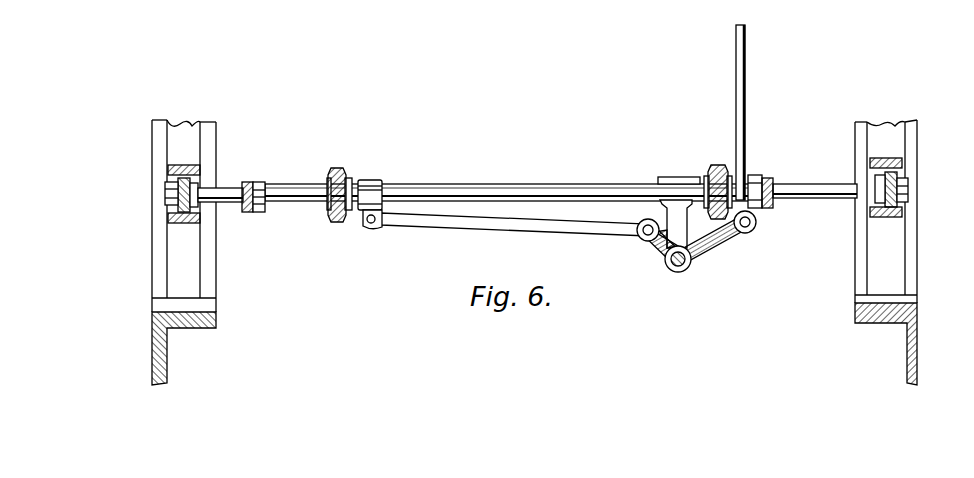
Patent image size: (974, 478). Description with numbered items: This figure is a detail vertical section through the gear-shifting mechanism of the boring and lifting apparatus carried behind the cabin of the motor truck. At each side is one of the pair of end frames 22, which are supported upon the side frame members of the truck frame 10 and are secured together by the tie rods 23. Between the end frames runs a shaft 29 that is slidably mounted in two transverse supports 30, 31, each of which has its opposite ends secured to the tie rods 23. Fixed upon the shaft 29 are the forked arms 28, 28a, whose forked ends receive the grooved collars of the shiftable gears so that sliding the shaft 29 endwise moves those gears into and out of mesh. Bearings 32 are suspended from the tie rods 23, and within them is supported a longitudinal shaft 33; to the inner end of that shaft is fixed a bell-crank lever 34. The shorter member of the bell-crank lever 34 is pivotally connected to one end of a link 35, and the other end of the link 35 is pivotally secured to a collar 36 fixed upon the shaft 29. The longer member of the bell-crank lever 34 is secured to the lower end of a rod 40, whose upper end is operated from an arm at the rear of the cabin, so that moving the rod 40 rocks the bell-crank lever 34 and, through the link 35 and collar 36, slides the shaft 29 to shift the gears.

The frame 10 is at (167, 367).
The end frame 22 is at (162, 203).
The rod 23 is at (235, 186).
The arm 28 is at (256, 212).
The arm 28a is at (770, 208).
The shaft 29 is at (290, 183).
The transverse support 30 is at (339, 222).
The transverse support 31 is at (712, 170).
The bearing 32 is at (660, 180).
The longitudinal shaft 33 is at (683, 268).
The bell-crank lever 34 is at (662, 256).
The link 35 is at (497, 228).
The collar 36 is at (376, 180).
The rod 40 is at (745, 80).